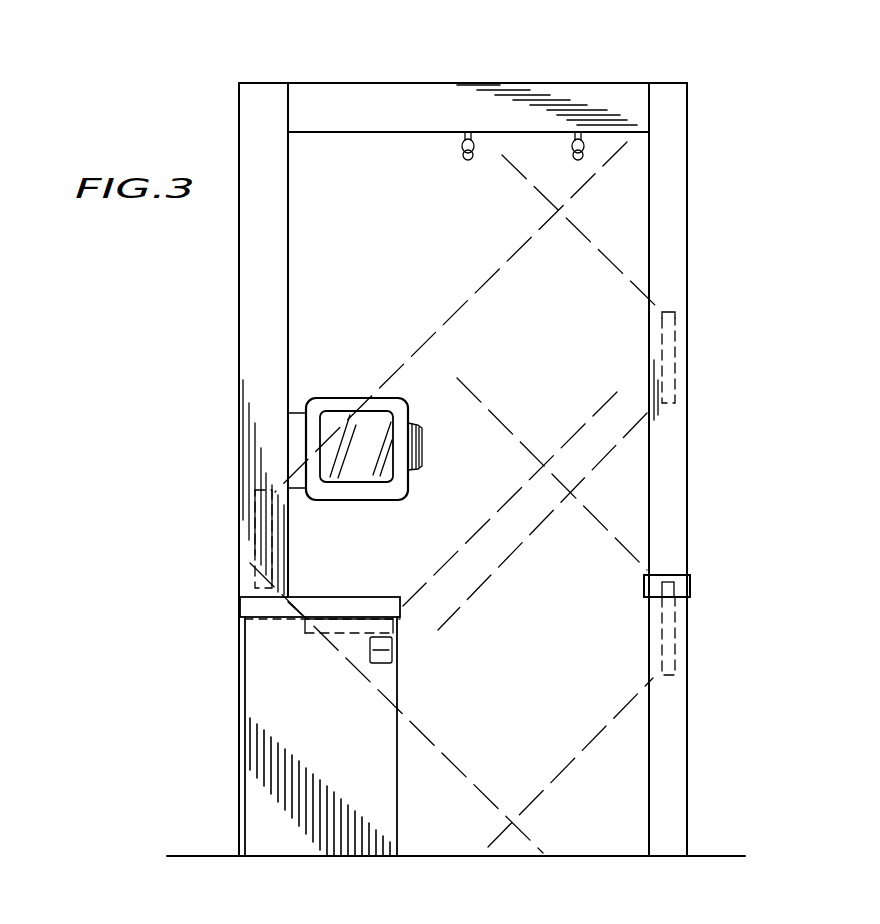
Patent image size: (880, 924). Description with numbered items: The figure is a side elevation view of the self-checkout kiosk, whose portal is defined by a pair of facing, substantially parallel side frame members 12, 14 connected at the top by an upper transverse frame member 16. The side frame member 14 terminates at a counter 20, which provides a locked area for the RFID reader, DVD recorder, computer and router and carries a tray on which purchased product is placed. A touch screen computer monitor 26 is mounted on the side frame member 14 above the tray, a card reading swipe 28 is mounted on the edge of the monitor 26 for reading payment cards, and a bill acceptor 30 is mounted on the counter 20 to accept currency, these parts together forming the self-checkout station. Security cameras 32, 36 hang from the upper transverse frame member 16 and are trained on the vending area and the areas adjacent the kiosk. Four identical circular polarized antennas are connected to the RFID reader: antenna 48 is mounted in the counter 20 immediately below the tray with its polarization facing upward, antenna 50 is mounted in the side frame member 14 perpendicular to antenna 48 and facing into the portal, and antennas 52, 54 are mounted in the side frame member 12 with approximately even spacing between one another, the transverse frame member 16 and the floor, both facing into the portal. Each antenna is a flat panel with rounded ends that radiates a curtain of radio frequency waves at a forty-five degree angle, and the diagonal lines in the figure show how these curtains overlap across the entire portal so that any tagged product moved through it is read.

The side frame member 12 is at (677, 208).
The side frame member 14 is at (257, 230).
The upper transverse frame member 16 is at (593, 88).
The counter 20 is at (375, 768).
The touch screen computer monitor 26 is at (378, 410).
The card reading swipe 28 is at (424, 437).
The bill acceptor 30 is at (395, 657).
The security camera 32 is at (572, 153).
The security camera 36 is at (456, 148).
The antenna 48 is at (308, 637).
The antenna 50 is at (255, 525).
The antenna 52 is at (676, 342).
The antenna 54 is at (670, 640).